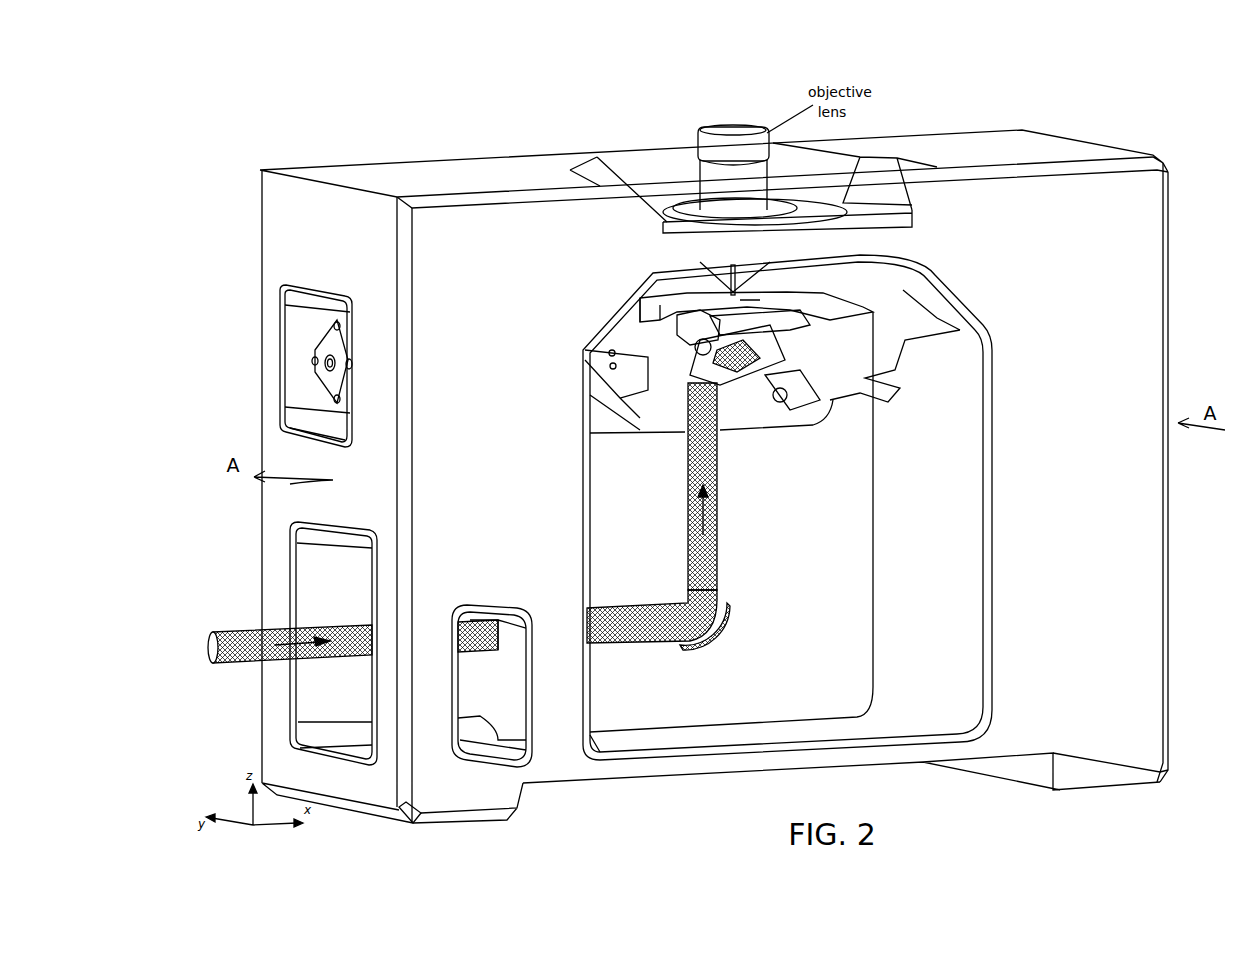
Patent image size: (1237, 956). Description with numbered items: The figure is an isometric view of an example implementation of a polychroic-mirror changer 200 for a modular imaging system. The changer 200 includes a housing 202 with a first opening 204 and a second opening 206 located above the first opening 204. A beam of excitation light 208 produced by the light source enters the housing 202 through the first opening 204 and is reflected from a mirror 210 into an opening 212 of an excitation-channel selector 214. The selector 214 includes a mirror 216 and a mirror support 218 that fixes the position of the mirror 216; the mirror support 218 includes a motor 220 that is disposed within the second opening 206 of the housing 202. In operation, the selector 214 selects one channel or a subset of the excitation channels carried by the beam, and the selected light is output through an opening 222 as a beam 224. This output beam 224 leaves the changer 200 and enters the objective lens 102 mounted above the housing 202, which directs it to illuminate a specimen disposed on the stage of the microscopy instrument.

The polychroic-mirror changer 200 is at (1152, 126).
The housing 202 is at (373, 177).
The first opening 204 is at (318, 700).
The second opening 206 is at (298, 322).
The beam of excitation light 208 is at (233, 655).
The mirror 210 is at (722, 624).
The opening of the excitation-channel selector 212 is at (685, 410).
The excitation-channel selector 214 is at (784, 448).
The mirror 216 is at (737, 370).
The mirror support 218 is at (778, 380).
The motor 220 is at (320, 378).
The opening 222 is at (782, 283).
The beam 224 is at (731, 283).
The objective lens 102 is at (712, 138).